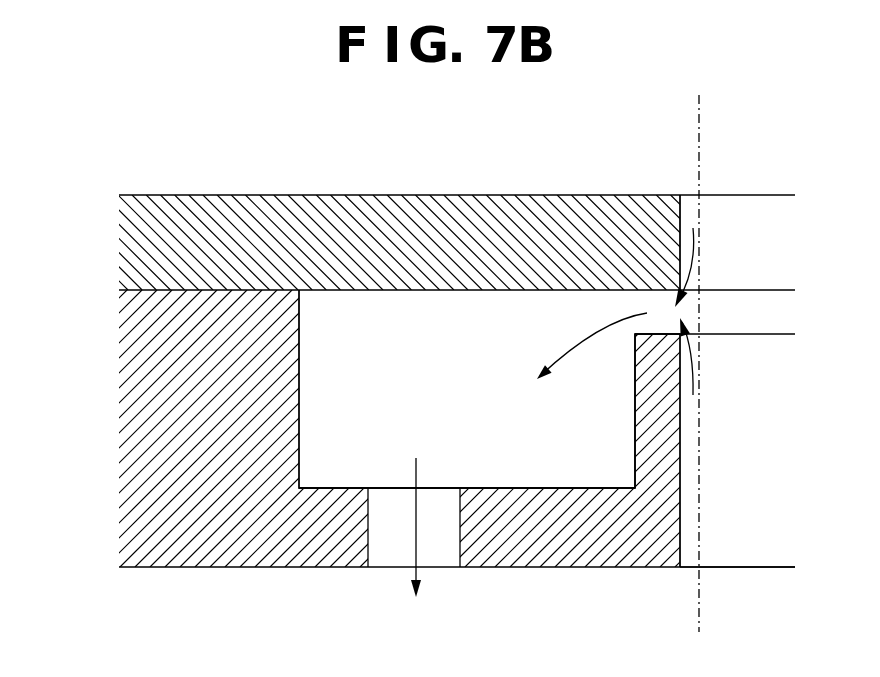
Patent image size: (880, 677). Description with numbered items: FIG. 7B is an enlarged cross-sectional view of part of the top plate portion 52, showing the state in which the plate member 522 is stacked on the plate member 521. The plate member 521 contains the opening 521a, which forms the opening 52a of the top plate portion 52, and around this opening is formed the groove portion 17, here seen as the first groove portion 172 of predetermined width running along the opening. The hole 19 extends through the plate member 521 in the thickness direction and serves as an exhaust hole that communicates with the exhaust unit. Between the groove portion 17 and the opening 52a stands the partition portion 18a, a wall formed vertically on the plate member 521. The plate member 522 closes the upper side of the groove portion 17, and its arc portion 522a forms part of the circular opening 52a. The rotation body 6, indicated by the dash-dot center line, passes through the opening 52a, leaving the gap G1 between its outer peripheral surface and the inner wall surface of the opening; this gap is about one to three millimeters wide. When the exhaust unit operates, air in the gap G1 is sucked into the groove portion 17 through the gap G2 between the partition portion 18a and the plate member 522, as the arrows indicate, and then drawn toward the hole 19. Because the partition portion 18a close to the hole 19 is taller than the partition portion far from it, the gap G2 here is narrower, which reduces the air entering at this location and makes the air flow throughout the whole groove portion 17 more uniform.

The top plate portion 52 is at (112, 181).
The plate member 522 is at (119, 265).
The plate member 521 is at (222, 563).
The groove portion 17 is at (435, 307).
The first groove portion 172 is at (573, 475).
The hole 19 is at (392, 562).
The opening 521a is at (680, 417).
The partition portion 18a is at (663, 435).
The arc portion 522a is at (680, 215).
The gap G2 is at (655, 303).
The gap G1 is at (692, 553).
The rotation body 6 is at (700, 527).
The opening 52a is at (721, 578).